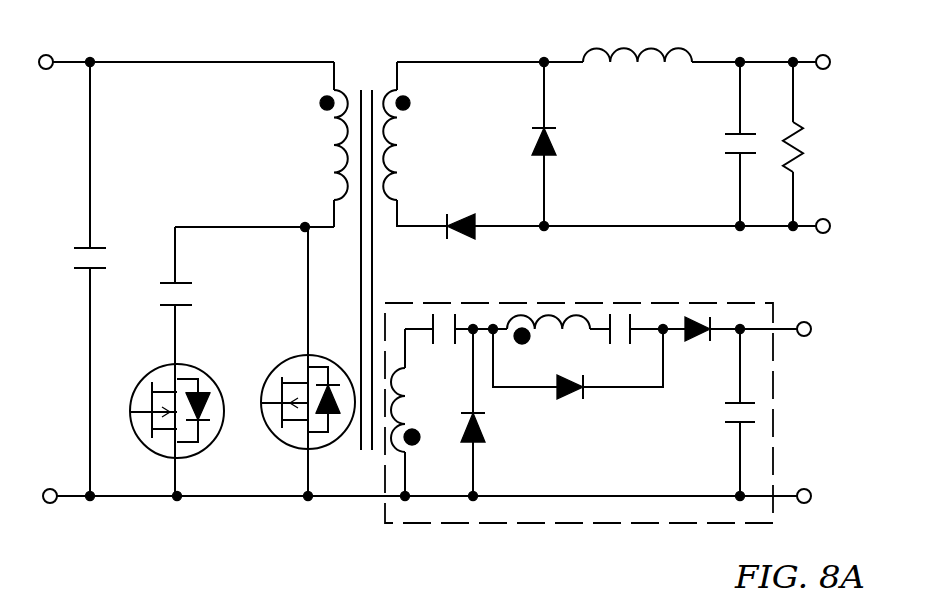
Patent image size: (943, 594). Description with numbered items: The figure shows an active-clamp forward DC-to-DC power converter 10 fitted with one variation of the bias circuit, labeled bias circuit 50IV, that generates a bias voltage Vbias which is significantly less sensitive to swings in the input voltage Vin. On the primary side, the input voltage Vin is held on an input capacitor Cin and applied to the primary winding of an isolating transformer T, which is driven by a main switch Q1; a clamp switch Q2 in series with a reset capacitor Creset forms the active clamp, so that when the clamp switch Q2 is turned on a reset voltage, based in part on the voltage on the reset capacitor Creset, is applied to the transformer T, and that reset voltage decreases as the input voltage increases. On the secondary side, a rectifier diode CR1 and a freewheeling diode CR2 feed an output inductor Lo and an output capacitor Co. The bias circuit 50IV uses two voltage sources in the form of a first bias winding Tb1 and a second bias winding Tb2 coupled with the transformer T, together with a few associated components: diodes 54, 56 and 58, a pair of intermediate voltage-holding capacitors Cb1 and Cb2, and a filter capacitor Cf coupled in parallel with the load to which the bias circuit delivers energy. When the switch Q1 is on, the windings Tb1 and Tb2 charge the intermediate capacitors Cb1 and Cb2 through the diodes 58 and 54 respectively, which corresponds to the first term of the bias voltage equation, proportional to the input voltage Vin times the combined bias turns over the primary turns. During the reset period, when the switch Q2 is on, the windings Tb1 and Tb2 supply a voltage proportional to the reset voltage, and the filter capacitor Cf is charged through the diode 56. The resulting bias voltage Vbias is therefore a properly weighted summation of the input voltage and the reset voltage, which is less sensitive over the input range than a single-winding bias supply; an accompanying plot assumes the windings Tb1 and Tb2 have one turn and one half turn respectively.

The input voltage Vin is at (47, 55).
The power converter 10 is at (308, 46).
The isolating transformer T is at (382, 62).
The input capacitor Cin is at (97, 247).
The reset capacitor Creset is at (181, 283).
The switch Q1 is at (277, 370).
The clamp switch Q2 is at (160, 370).
The rectifier diode CR1 is at (458, 215).
The freewheeling diode CR2 is at (553, 148).
The output inductor Lo is at (623, 47).
The output capacitor Co is at (737, 133).
The bias circuit 50IV is at (624, 390).
The first bias winding Tb1 is at (409, 419).
The second bias winding Tb2 is at (548, 315).
The intermediate voltage-holding capacitor Cb1 is at (457, 317).
The intermediate voltage-holding capacitor Cb2 is at (638, 320).
The filter capacitor Cf is at (737, 400).
The diode 54 is at (565, 394).
The diode 56 is at (698, 320).
The diode 58 is at (480, 429).
The bias voltage Vbias is at (847, 329).